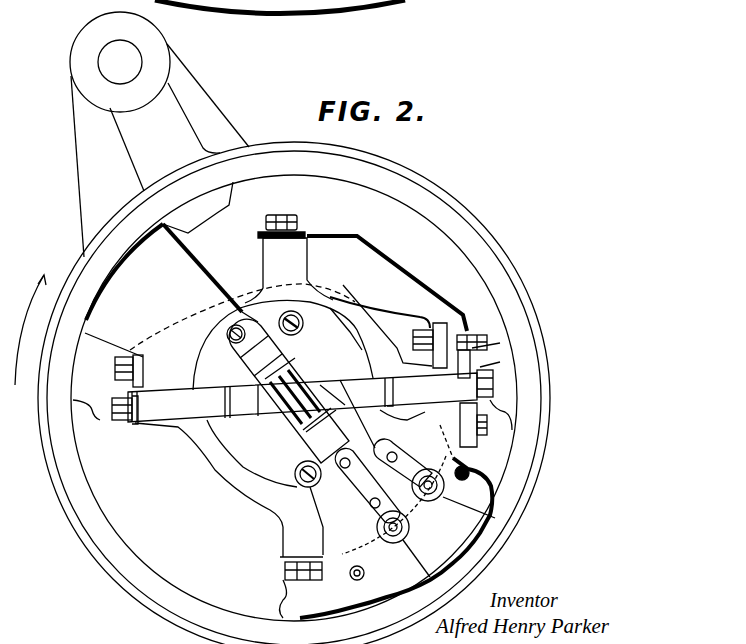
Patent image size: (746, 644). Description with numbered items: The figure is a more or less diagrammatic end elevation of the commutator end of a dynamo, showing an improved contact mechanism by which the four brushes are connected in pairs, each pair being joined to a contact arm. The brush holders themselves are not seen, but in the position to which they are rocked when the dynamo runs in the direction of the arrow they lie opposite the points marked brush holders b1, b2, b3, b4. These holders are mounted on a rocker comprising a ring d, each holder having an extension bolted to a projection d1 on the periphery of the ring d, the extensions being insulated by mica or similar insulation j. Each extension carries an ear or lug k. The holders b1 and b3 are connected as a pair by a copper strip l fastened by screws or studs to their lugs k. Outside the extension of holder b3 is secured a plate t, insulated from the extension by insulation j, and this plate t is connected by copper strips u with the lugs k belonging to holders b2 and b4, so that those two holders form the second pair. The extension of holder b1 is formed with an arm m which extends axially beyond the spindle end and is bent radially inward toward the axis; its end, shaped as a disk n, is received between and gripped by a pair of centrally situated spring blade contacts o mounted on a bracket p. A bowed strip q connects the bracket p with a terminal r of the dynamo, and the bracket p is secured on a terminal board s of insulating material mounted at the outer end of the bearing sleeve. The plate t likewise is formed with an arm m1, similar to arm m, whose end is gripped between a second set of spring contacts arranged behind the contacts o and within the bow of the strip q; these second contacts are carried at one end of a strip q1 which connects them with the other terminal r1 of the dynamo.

The brush holder b1 is at (115, 408).
The brush holder b2 is at (281, 213).
The brush holder b3 is at (499, 383).
The brush holder b4 is at (302, 583).
The ear or lug k is at (128, 362).
The ring d is at (337, 301).
The projection d1 is at (300, 259).
The copper strips u is at (371, 245).
The copper strip l is at (281, 325).
The plate t is at (500, 343).
The insulation j is at (500, 362).
The arm m is at (302, 397).
The arm m1 is at (422, 389).
The disk end of arm n is at (307, 376).
The spring blade contacts o is at (298, 378).
The bracket p is at (243, 357).
The bowed strip q is at (378, 447).
The strip q1 is at (353, 483).
The terminal r is at (469, 514).
The terminal r1 is at (429, 505).
The terminal board s is at (405, 518).